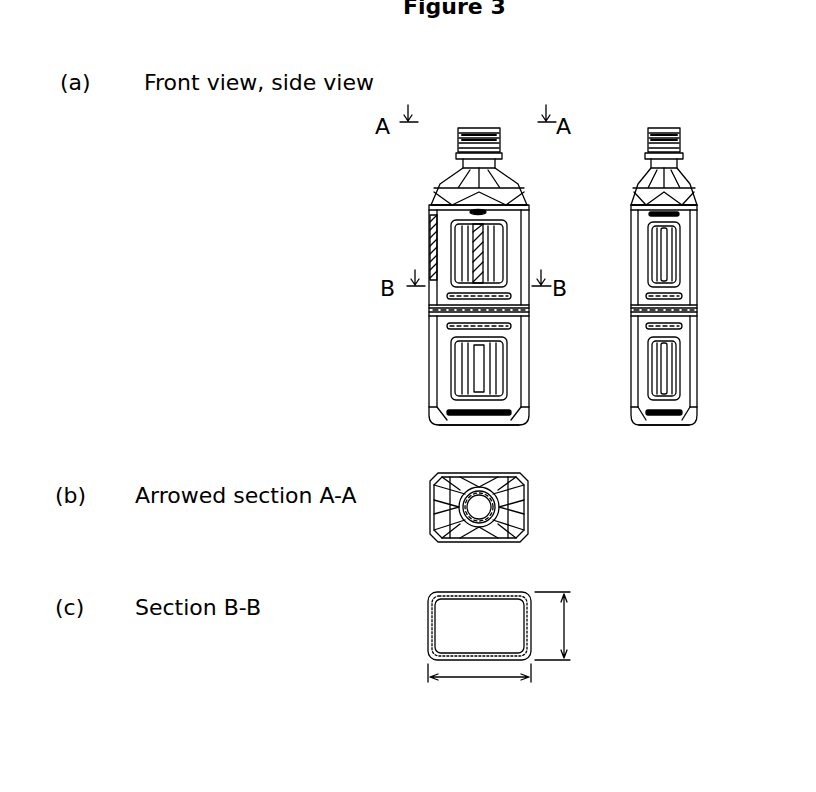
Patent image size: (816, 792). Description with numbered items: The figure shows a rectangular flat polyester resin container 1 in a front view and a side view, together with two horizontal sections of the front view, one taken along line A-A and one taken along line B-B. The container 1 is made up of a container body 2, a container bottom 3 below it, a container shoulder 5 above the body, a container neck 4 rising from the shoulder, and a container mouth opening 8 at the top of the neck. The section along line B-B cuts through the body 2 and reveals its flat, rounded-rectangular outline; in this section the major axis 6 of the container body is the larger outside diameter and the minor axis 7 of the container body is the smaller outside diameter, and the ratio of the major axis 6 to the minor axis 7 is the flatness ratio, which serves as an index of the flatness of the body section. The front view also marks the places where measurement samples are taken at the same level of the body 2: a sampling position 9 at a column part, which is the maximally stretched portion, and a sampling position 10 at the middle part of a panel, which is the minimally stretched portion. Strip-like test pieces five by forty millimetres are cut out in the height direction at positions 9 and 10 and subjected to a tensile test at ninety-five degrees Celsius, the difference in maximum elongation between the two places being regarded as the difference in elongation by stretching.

The flat polyester resin container 1 is at (546, 191).
The container body 2 is at (540, 215).
The container bottom 3 is at (478, 427).
The container neck 4 is at (500, 160).
The container shoulder 5 is at (445, 192).
The major axis of the container body 6 is at (440, 680).
The minor axis of the container body 7 is at (565, 627).
The container mouth opening 8 is at (496, 128).
The sampling position for the maximally stretched portion 9 is at (430, 248).
The sampling position for the minimally stretched portion 10 is at (432, 208).